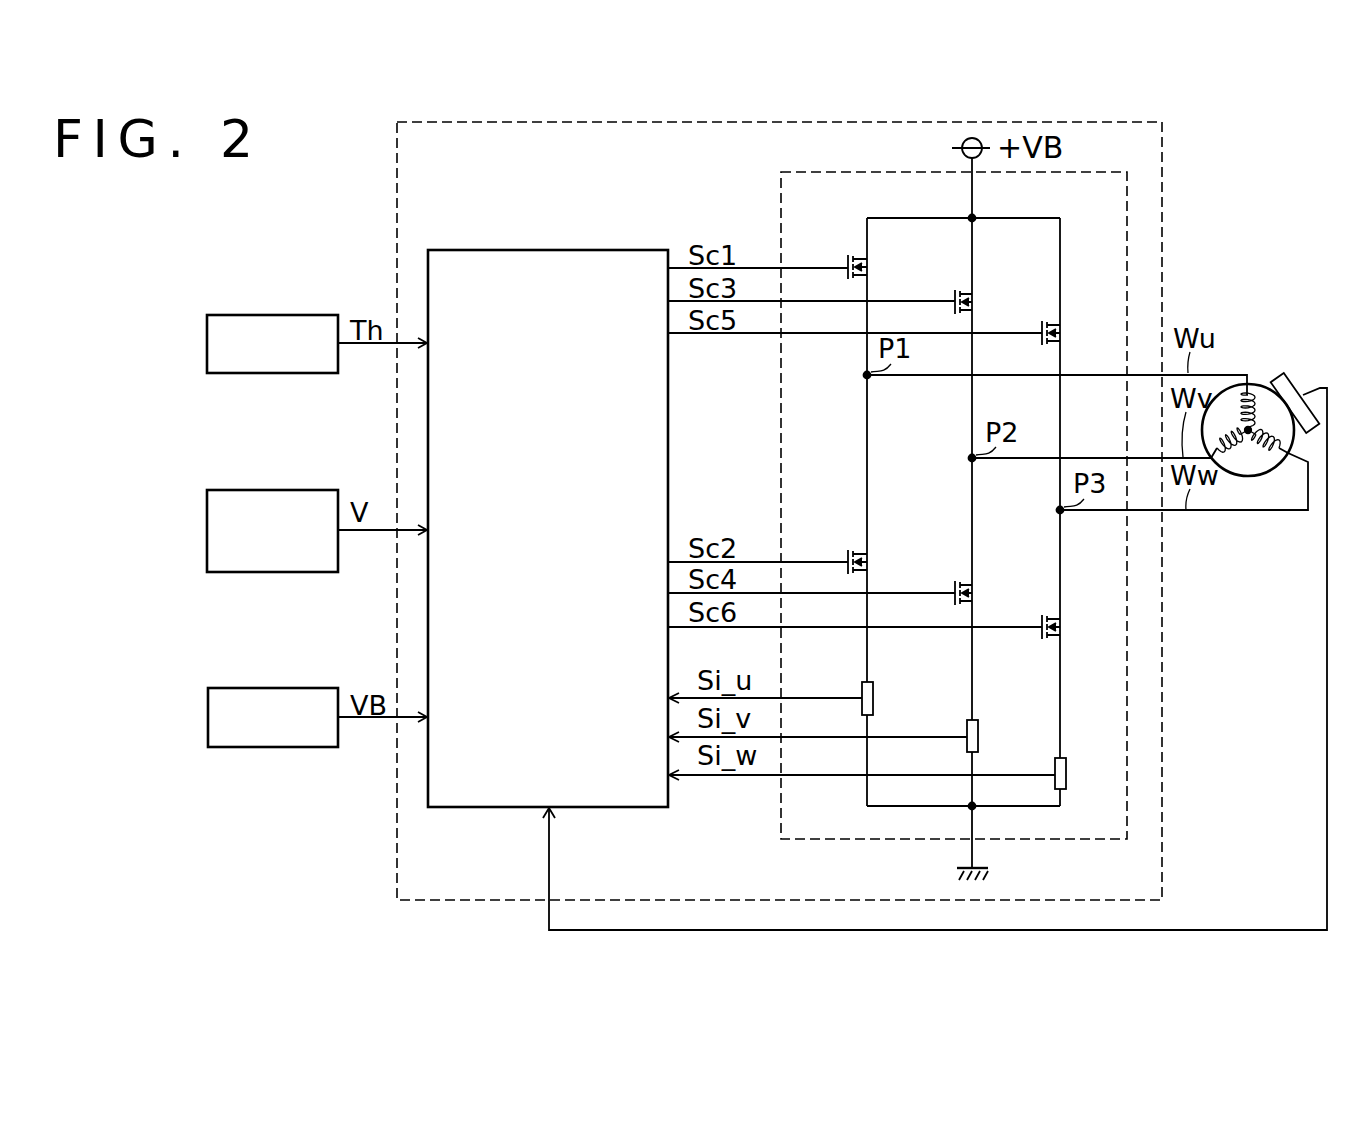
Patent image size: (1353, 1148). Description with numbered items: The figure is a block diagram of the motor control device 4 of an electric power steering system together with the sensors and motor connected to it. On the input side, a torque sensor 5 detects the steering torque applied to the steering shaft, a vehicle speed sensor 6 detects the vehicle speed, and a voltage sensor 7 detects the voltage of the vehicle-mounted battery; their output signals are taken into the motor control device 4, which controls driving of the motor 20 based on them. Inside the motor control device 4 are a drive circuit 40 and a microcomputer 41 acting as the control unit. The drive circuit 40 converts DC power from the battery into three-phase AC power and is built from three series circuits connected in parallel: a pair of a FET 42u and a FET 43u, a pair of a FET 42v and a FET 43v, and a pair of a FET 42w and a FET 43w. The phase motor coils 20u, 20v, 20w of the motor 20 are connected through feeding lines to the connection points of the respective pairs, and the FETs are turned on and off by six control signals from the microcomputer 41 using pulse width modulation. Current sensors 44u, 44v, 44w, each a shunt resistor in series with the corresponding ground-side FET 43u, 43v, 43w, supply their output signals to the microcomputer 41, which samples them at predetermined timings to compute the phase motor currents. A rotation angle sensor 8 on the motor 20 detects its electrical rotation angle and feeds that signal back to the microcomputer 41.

The motor control device 4 is at (1163, 140).
The torque sensor 5 is at (270, 315).
The vehicle speed sensor 6 is at (270, 490).
The voltage sensor 7 is at (270, 688).
The rotation angle sensor 8 is at (1299, 378).
The motor 20 is at (1252, 416).
The U-phase motor coil 20u is at (1240, 398).
The V-phase motor coil 20v is at (1228, 452).
The W-phase motor coil 20w is at (1266, 452).
The drive circuit 40 is at (1104, 172).
The microcomputer 41 is at (548, 250).
The FET 42u is at (846, 262).
The FET 42v is at (953, 297).
The FET 42w is at (1040, 328).
The FET 43u is at (846, 556).
The FET 43v is at (953, 586).
The FET 43w is at (1040, 620).
The current sensor 44u is at (872, 682).
The current sensor 44v is at (977, 720).
The current sensor 44w is at (1090, 738).